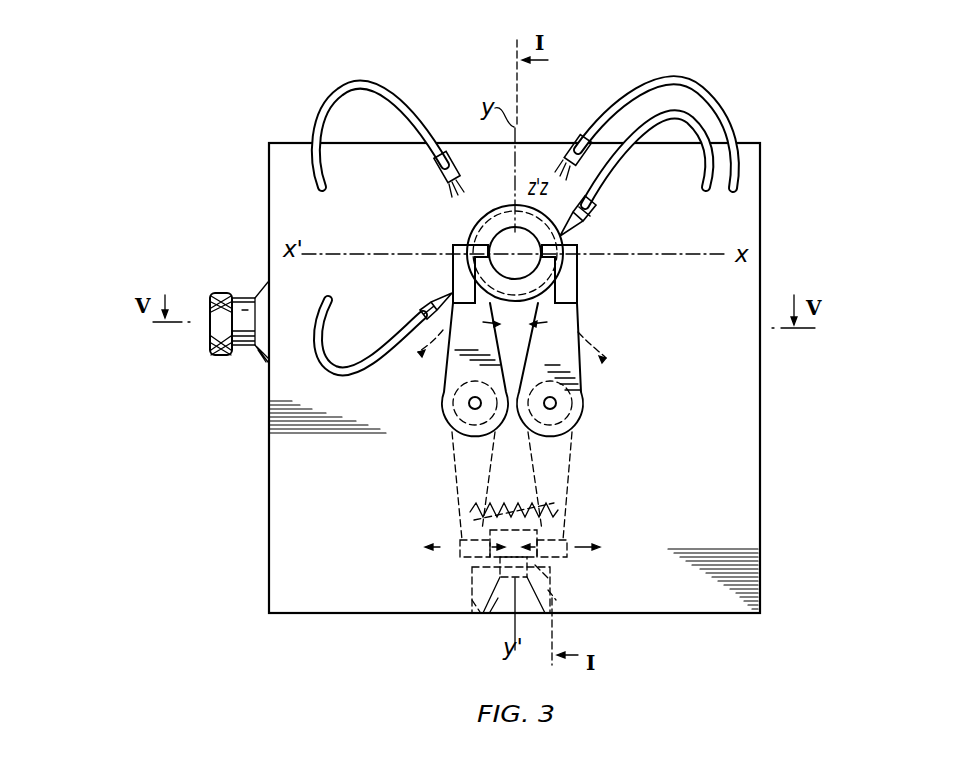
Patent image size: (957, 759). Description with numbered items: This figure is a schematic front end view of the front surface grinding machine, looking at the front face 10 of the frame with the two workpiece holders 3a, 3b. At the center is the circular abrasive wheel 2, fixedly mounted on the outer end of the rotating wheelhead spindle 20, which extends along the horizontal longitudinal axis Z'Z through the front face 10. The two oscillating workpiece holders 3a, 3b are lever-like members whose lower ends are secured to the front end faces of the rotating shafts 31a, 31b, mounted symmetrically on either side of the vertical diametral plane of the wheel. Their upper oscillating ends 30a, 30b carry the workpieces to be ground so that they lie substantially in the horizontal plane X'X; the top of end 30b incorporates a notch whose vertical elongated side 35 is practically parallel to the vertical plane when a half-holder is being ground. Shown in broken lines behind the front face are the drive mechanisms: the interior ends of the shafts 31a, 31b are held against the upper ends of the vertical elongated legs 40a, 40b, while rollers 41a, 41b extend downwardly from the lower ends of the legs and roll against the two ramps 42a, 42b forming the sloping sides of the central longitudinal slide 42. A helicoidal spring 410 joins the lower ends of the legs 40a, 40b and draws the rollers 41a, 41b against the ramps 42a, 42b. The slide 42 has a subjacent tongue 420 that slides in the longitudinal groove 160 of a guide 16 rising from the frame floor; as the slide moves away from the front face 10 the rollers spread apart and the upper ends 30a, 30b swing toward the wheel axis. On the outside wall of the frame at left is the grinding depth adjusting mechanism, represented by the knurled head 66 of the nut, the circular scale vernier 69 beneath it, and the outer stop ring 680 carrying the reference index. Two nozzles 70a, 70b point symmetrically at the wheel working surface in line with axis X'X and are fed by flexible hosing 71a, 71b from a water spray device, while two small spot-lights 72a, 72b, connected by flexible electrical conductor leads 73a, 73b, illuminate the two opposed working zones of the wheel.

The abrasive wheel 2 is at (501, 205).
The workpiece holder 3a is at (568, 352).
The workpiece holder 3b is at (455, 370).
The front face 10 is at (745, 463).
The guide 16 is at (490, 612).
The wheelhead spindle 20 is at (478, 230).
The upper oscillating end 30a is at (578, 272).
The upper oscillating end 30b is at (452, 258).
The rotating shaft 31a is at (578, 420).
The rotating shaft 31b is at (452, 420).
The vertical elongated side 35 is at (580, 300).
The vertical elongated leg 40a is at (560, 492).
The vertical elongated leg 40b is at (455, 486).
The roller 41a is at (570, 555).
The roller 41b is at (458, 552).
The central longitudinal slide 42 is at (560, 575).
The ramp 42a is at (575, 565).
The ramp 42b is at (472, 574).
The knurled head 66 is at (220, 293).
The circular scale vernier 69 is at (228, 356).
The nozzle 70a is at (590, 222).
The nozzle 70b is at (428, 300).
The flexible hosing 71a is at (703, 172).
The flexible hosing 71b is at (332, 300).
The spot-light 72a is at (580, 137).
The spot-light 72b is at (432, 172).
The flexible electrical conductor lead 73a is at (716, 105).
The flexible electrical conductor lead 73b is at (343, 90).
The longitudinal groove 160 is at (470, 616).
The helicoidal spring 410 is at (555, 506).
The subjacent tongue 420 is at (560, 600).
The outer stop ring 680 is at (258, 355).